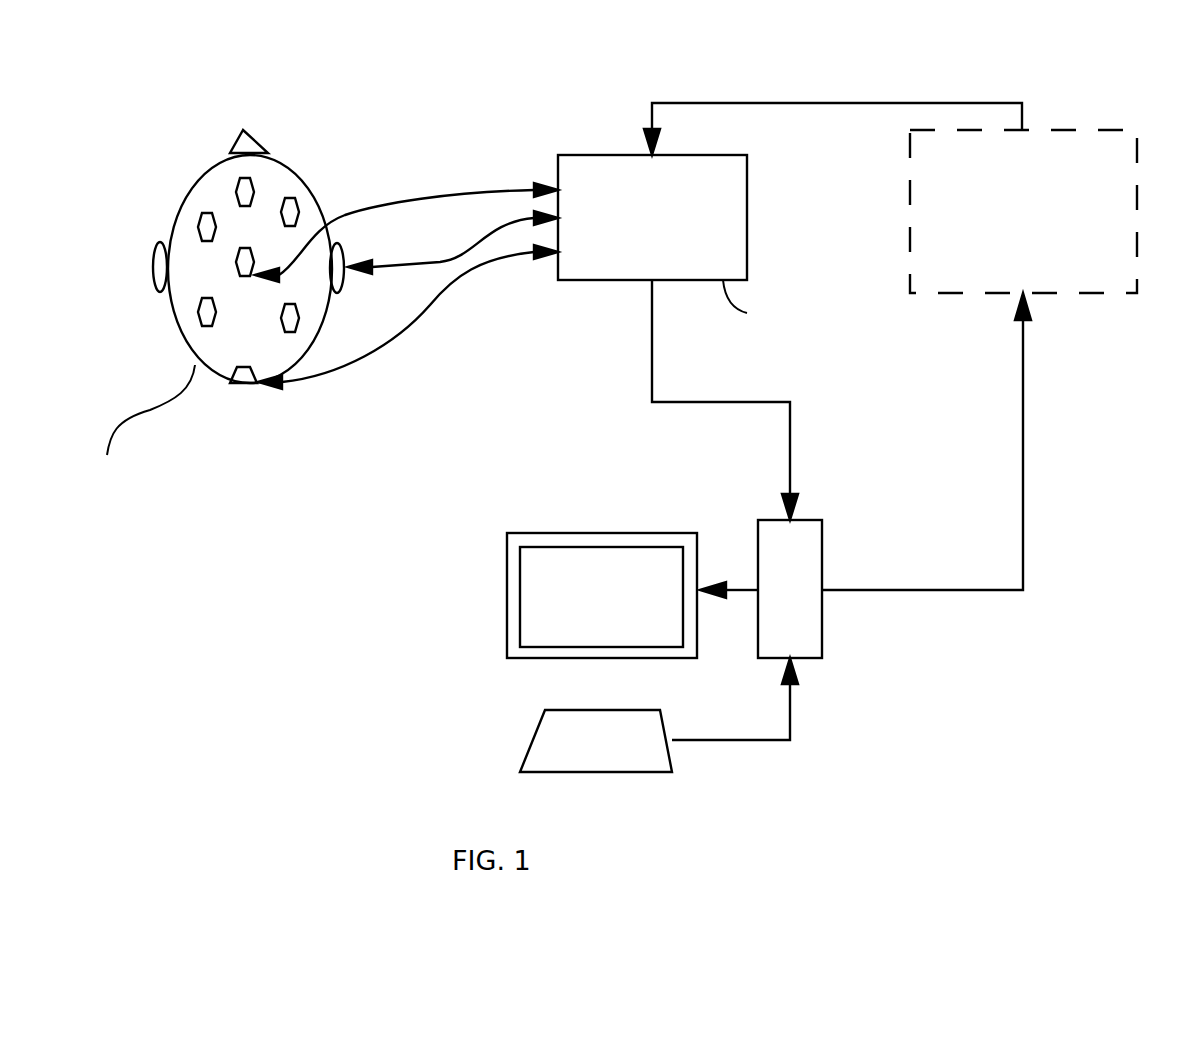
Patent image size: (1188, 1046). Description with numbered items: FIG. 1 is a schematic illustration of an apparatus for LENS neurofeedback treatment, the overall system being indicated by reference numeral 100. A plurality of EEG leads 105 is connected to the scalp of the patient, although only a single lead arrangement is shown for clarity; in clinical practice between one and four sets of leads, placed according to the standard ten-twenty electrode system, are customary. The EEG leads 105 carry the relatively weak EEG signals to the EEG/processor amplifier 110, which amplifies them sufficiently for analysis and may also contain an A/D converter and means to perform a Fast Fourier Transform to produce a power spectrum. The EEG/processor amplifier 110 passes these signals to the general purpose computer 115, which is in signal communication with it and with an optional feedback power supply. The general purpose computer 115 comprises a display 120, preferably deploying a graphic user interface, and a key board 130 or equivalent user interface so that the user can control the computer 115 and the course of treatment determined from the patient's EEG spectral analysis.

The EEG-based system with optional feedback power supply 100 is at (900, 138).
The EEG leads 105 is at (418, 332).
The EEG/processor amplifier 110 is at (640, 245).
The general purpose computer 115 is at (830, 590).
The display 120 is at (507, 597).
The key board 130 is at (595, 772).